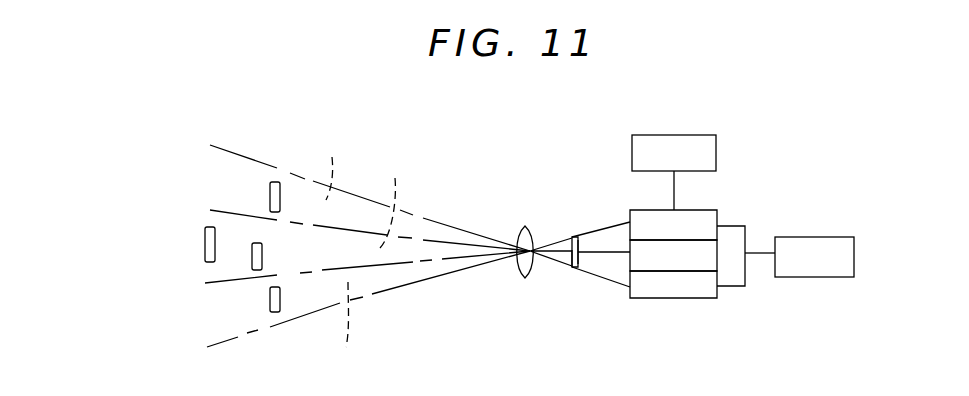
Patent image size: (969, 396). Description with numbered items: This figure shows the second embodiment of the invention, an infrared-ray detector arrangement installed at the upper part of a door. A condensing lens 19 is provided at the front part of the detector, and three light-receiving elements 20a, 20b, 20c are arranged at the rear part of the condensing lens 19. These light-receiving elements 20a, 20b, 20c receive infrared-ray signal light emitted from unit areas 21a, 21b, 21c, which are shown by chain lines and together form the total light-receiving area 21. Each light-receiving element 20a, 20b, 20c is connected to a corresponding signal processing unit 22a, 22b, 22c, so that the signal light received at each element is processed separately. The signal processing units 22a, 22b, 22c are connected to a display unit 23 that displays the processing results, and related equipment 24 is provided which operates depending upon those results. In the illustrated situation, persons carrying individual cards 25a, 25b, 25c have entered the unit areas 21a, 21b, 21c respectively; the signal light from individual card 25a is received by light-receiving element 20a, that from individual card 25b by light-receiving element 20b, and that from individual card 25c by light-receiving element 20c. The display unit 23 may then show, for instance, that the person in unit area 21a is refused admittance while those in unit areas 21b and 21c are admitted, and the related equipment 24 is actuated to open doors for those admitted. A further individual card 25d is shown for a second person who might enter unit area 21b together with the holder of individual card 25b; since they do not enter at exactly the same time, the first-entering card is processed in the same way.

The condensing lens 19 is at (525, 227).
The light-receiving element 20a is at (577, 237).
The light-receiving element 20b is at (583, 257).
The light-receiving element 20c is at (568, 267).
The total light-receiving area 21 is at (183, 207).
The unit area 21a is at (353, 330).
The unit area 21b is at (409, 200).
The unit area 21c is at (356, 167).
The signal processing unit 22a is at (687, 230).
The signal processing unit 22b is at (665, 258).
The signal processing unit 22c is at (695, 290).
The display unit 23 is at (673, 147).
The related equipment 24 is at (807, 262).
The individual card 25a is at (272, 305).
The individual card 25b is at (262, 258).
The individual card 25c is at (278, 182).
The individual card 25d is at (205, 247).